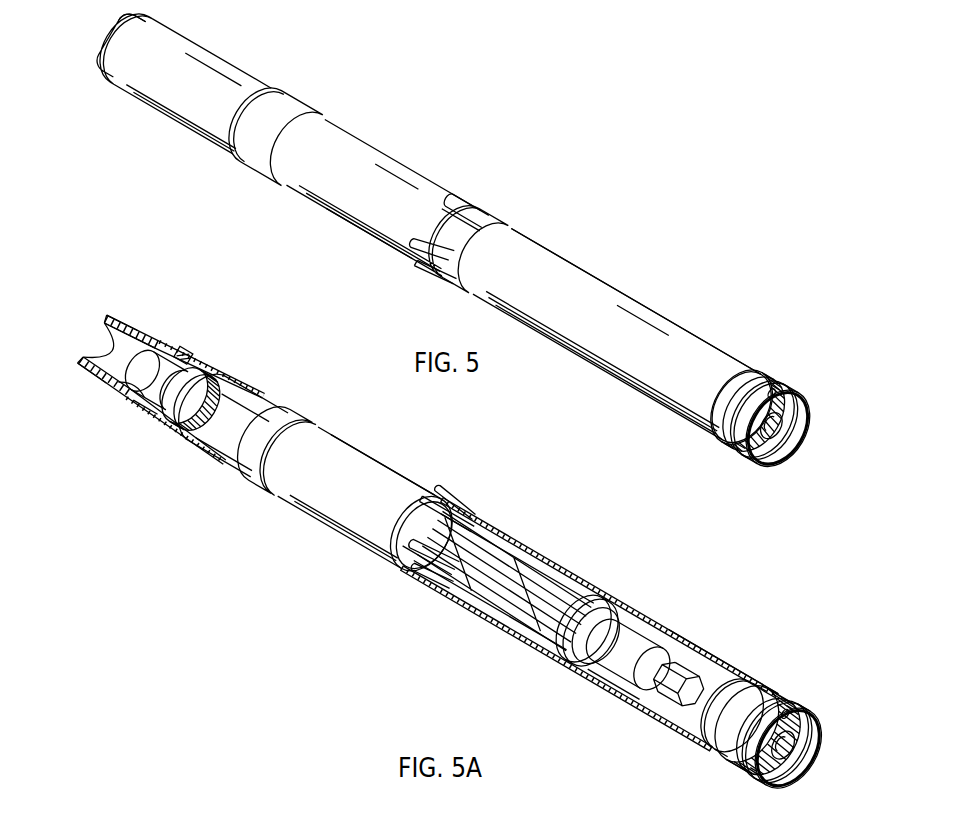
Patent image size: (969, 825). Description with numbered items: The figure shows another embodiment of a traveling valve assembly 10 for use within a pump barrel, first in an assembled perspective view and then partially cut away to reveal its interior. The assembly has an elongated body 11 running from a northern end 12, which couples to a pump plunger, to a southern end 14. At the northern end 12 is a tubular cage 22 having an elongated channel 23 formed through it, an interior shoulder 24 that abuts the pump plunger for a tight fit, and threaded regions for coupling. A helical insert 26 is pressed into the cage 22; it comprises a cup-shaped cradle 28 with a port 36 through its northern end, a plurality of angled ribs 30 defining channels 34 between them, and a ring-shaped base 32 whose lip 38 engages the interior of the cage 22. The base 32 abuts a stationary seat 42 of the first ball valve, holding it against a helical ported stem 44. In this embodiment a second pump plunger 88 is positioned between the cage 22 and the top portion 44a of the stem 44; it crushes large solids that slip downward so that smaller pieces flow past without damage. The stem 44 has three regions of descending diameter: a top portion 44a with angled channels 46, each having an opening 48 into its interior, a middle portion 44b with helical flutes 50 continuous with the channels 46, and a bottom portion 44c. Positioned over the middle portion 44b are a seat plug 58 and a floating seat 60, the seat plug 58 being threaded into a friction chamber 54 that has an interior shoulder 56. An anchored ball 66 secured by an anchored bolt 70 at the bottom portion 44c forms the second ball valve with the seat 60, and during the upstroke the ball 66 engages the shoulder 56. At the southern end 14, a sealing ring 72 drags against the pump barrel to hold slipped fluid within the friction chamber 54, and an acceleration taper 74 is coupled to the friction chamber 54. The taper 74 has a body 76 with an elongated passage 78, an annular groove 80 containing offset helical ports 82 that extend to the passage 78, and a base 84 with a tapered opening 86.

In FIG. 5, the traveling valve assembly 10 is at (548, 172).
In FIG. 5A, the traveling valve assembly 10 is at (444, 455).
In FIG. 5, the elongated body 11 is at (318, 257).
In FIG. 5, the northern end 12 is at (118, 103).
In FIG. 5A, the northern end 12 is at (117, 488).
In FIG. 5, the southern end 14 is at (760, 276).
In FIG. 5A, the southern end 14 is at (751, 666).
In FIG. 5, the cage 22 is at (186, 100).
In FIG. 5A, the cage 22 is at (155, 330).
In FIG. 5A, the elongated channel 23 is at (99, 321).
In FIG. 5A, the shoulder 24 is at (135, 322).
In FIG. 5A, the helical insert 26 is at (187, 350).
In FIG. 5A, the cradle 28 is at (167, 347).
In FIG. 5A, the ribs 30 is at (123, 393).
In FIG. 5A, the base 32 is at (205, 423).
In FIG. 5A, the channels 34 is at (147, 410).
In FIG. 5A, the port 36 is at (108, 333).
In FIG. 5A, the lip 38 is at (217, 383).
In FIG. 5A, the seat 42 is at (237, 390).
In FIG. 5, the helical ported stem 44 is at (370, 166).
In FIG. 5A, the helical ported stem 44 is at (447, 613).
In FIG. 5A, the top portion 44a is at (303, 487).
In FIG. 5A, the middle portion 44b is at (548, 575).
In FIG. 5A, the bottom portion 44c is at (643, 620).
In FIG. 5, the channels 46 is at (478, 216).
In FIG. 5A, the channels 46 is at (423, 567).
In FIG. 5, the opening 48 is at (448, 198).
In FIG. 5A, the opening 48 is at (403, 540).
In FIG. 5A, the helical flutes 50 is at (511, 553).
In FIG. 5, the friction chamber 54 is at (627, 307).
In FIG. 5A, the friction chamber 54 is at (503, 621).
In FIG. 5A, the shoulder 56 is at (597, 677).
In FIG. 5, the seat plug 58 is at (456, 282).
In FIG. 5A, the seat plug 58 is at (464, 523).
In FIG. 5A, the seat 60 is at (600, 587).
In FIG. 5A, the anchored ball 66 is at (633, 673).
In FIG. 5A, the anchored bolt 70 is at (680, 690).
In FIG. 5A, the sealing ring 72 is at (720, 748).
In FIG. 5, the acceleration taper 74 is at (772, 482).
In FIG. 5A, the acceleration taper 74 is at (806, 633).
In FIG. 5A, the body 76 is at (707, 721).
In FIG. 5A, the elongated passage 78 is at (784, 741).
In FIG. 5A, the annular groove 80 is at (750, 733).
In FIG. 5A, the helical ports 82 is at (773, 702).
In FIG. 5A, the base 84 is at (807, 711).
In FIG. 5A, the tapered opening 86 is at (785, 777).
In FIG. 5, the second pump plunger 88 is at (270, 150).
In FIG. 5A, the second pump plunger 88 is at (243, 450).